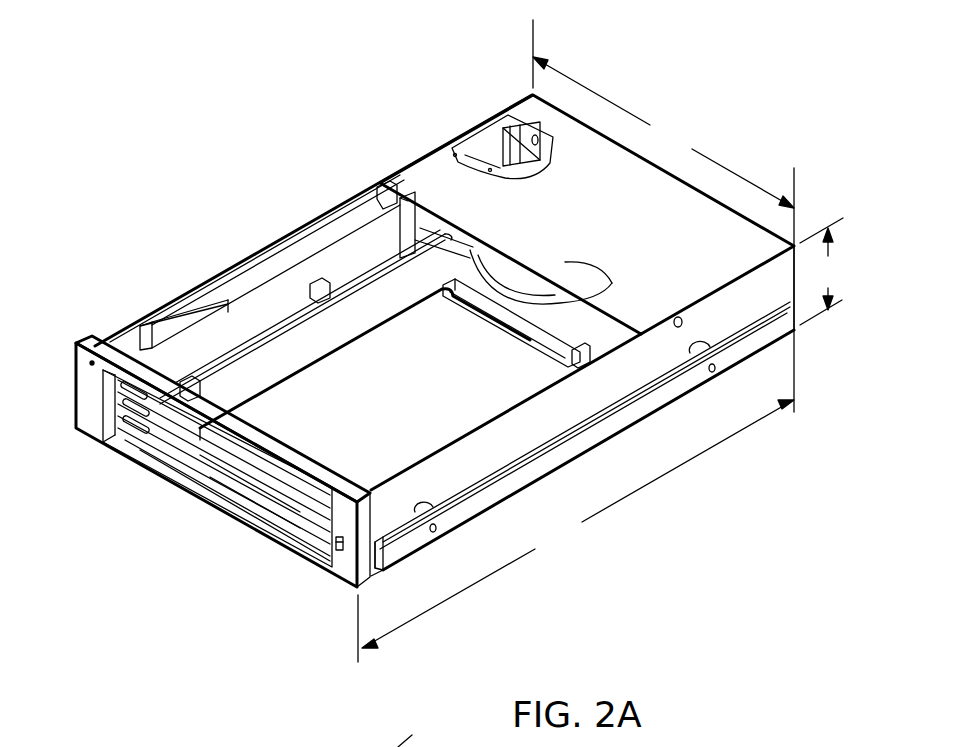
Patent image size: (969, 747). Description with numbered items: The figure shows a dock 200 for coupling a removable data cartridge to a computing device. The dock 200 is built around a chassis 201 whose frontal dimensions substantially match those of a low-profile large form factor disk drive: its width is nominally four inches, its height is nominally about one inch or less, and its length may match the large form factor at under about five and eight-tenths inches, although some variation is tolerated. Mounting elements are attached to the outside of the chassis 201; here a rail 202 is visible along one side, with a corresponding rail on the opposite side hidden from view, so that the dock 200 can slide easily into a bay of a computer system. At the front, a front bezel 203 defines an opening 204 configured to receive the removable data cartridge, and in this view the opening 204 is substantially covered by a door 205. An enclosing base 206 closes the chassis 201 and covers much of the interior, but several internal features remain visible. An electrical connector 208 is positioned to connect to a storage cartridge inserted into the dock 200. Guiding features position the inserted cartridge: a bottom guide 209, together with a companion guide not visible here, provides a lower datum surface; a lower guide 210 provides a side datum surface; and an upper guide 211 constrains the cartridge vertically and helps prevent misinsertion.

The dock 200 is at (232, 165).
The chassis 201 is at (743, 303).
The rail 202 is at (640, 408).
The front bezel 203 is at (345, 565).
The opening 204 is at (212, 483).
The door 205 is at (120, 413).
The enclosing base 206 is at (424, 170).
The electrical connector 208 is at (522, 342).
The bottom guide 209 is at (283, 377).
The lower guide 210 is at (347, 315).
The upper guide 211 is at (263, 258).